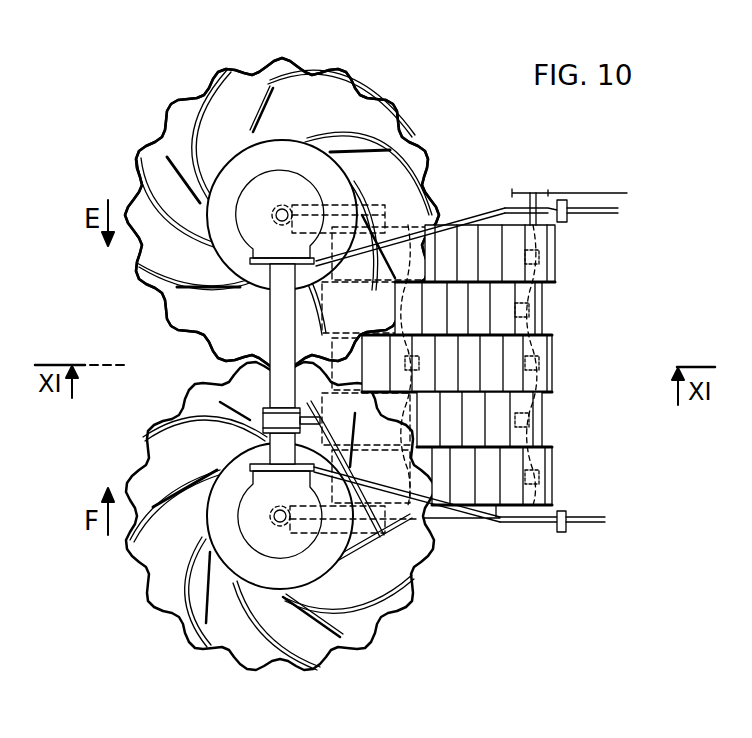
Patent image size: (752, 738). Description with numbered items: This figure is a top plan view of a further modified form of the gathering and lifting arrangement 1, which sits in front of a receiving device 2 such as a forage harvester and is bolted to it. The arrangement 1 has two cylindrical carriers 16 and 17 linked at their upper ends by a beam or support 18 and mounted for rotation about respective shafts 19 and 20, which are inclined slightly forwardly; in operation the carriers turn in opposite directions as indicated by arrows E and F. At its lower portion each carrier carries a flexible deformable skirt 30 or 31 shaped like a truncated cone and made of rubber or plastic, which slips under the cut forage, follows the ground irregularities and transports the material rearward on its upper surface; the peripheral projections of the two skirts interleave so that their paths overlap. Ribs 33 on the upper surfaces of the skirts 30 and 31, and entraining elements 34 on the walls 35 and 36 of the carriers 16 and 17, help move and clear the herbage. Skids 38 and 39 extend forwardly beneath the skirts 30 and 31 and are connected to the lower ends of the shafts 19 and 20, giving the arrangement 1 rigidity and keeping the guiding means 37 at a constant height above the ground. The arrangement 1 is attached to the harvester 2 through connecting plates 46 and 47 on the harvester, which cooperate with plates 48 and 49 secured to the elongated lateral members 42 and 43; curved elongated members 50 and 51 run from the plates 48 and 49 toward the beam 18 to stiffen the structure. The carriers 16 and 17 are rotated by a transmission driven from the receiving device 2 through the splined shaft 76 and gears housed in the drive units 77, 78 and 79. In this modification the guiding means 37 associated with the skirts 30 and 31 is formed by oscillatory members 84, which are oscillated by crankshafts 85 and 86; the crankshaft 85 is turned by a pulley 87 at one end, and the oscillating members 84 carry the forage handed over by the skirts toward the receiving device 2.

The gathering and lifting arrangement 1 is at (145, 135).
The receiving device 2 is at (597, 215).
The cylindrical carrier 16 is at (218, 205).
The cylindrical carrier 17 is at (228, 487).
The beam or support 18 is at (283, 340).
The shaft 19 is at (286, 212).
The shaft 20 is at (272, 522).
The flexible deformable skirt 30 is at (170, 258).
The flexible deformable skirt 31 is at (222, 625).
The ribs 33 is at (310, 72).
The entraining elements 34 is at (273, 88).
The wall 35 is at (300, 145).
The wall 36 is at (372, 590).
The guiding means 37 is at (553, 313).
The skid 38 is at (405, 192).
The skid 39 is at (395, 542).
The elongated lateral member 42 is at (450, 222).
The elongated lateral member 43 is at (443, 522).
The connecting plate 46 is at (568, 212).
The connecting plate 47 is at (565, 530).
The connecting plate 48 is at (563, 203).
The connecting plate 49 is at (557, 530).
The curved elongated member 50 is at (505, 207).
The curved elongated member 51 is at (495, 522).
The shaft 76 is at (298, 414).
The drive unit 77 is at (278, 425).
The drive unit 78 is at (265, 230).
The drive unit 79 is at (258, 520).
The oscillatory members 84 is at (500, 358).
The crankshaft 85 is at (420, 380).
The crankshaft 86 is at (553, 262).
The pulley 87 is at (538, 192).